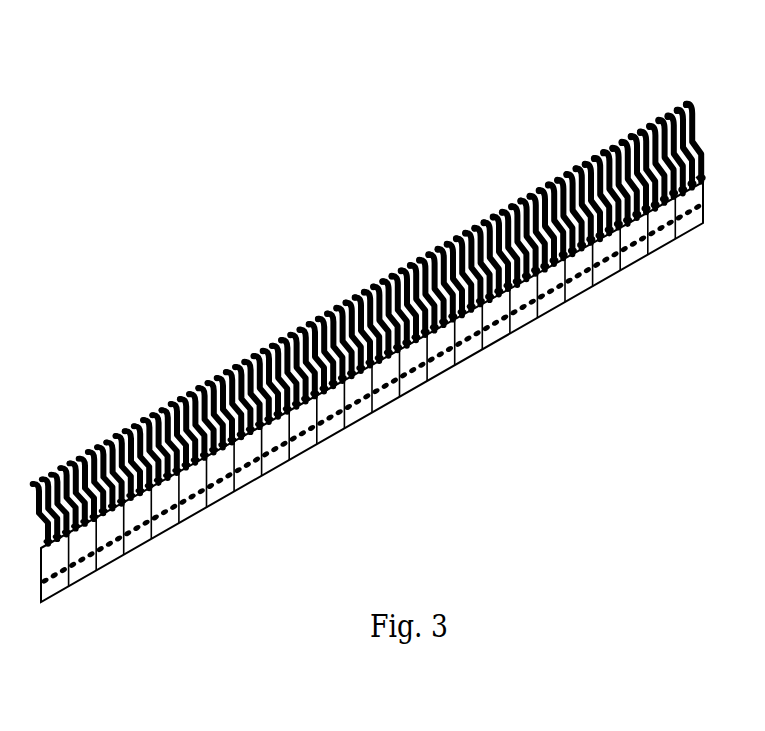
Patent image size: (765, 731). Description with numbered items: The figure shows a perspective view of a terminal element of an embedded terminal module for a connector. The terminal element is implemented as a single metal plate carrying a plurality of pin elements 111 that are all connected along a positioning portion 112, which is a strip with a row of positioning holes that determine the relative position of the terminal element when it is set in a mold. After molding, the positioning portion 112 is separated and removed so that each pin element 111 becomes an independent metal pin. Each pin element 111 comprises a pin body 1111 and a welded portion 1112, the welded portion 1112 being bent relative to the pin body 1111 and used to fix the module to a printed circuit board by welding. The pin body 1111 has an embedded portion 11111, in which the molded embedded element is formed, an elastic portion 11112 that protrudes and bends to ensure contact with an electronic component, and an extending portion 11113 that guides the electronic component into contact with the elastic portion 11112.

The pin element 111 is at (213, 60).
The pin body 1111 is at (295, 148).
The embedded portion 11111 is at (437, 258).
The elastic portion 11112 is at (520, 203).
The extending portion 11113 is at (605, 152).
The welded portion 1112 is at (468, 322).
The positioning portion 112 is at (297, 450).